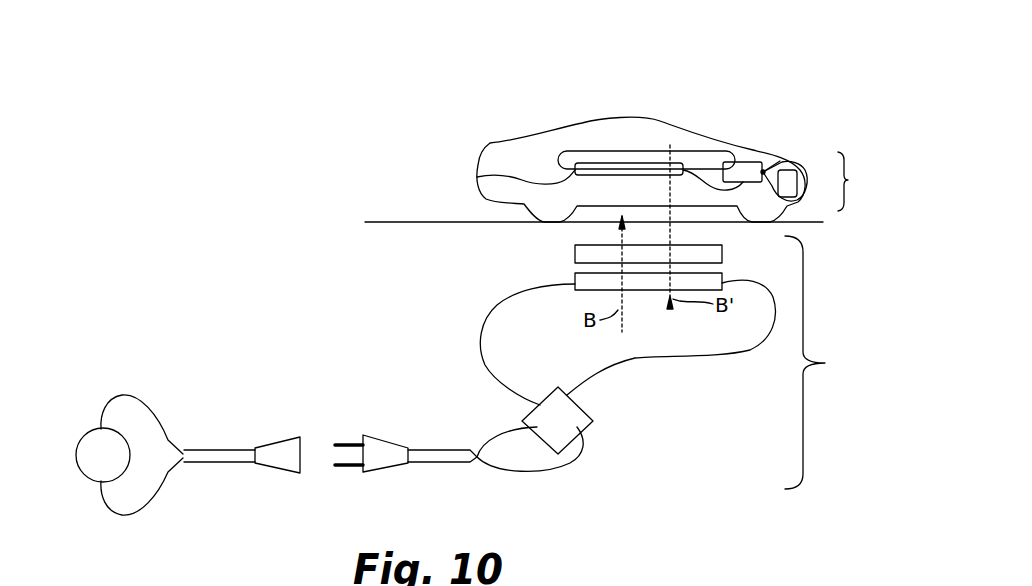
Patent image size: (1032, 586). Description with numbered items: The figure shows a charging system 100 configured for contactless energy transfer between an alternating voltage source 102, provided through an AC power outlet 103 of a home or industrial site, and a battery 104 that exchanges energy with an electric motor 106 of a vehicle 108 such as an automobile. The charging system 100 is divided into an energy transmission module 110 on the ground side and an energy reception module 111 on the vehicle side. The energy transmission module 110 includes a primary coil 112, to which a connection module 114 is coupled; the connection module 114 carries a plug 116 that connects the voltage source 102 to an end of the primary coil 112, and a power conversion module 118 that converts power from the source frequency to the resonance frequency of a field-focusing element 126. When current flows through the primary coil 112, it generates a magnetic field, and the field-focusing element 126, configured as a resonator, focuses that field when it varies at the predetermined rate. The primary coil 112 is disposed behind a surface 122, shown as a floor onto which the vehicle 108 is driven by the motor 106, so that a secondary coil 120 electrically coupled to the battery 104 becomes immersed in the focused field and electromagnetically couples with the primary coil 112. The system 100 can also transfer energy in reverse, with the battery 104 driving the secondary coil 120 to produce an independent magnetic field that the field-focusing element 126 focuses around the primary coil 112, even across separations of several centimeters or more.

The charging system 100 is at (751, 88).
The alternating voltage source 102 is at (92, 433).
The AC power outlet 103 is at (267, 442).
The battery 104 is at (764, 164).
The electric motor 106 is at (800, 167).
The vehicle 108 is at (673, 122).
The energy transmission module 110 is at (607, 374).
The energy reception module 111 is at (805, 158).
The primary coil 112 is at (575, 290).
The connection module 114 is at (440, 449).
The plug 116 is at (390, 471).
The power conversion module 118 is at (522, 421).
The secondary coil 120 is at (477, 177).
The surface 122 is at (388, 221).
The field-focusing element 126 is at (575, 250).